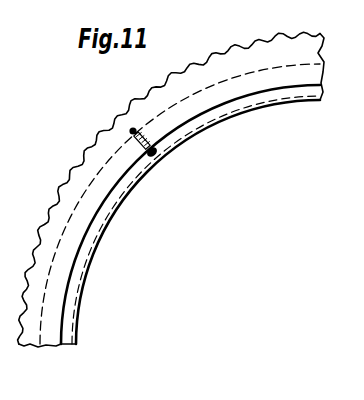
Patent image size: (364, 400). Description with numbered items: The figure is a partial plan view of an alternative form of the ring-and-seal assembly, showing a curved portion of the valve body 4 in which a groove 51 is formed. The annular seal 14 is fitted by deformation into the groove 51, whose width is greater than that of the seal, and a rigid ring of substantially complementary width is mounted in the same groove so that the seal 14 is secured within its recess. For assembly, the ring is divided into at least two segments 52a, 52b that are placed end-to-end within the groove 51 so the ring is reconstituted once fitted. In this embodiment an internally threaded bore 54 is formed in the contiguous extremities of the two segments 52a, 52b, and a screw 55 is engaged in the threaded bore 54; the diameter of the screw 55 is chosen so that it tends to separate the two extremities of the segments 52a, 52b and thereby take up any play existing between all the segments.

The valve body 4 is at (215, 70).
The annular seal 14 is at (204, 126).
The groove 51 is at (262, 67).
The segment 52a is at (164, 125).
The segment 52b is at (113, 175).
The internally threaded bore 54 is at (134, 128).
The screw 55 is at (153, 158).